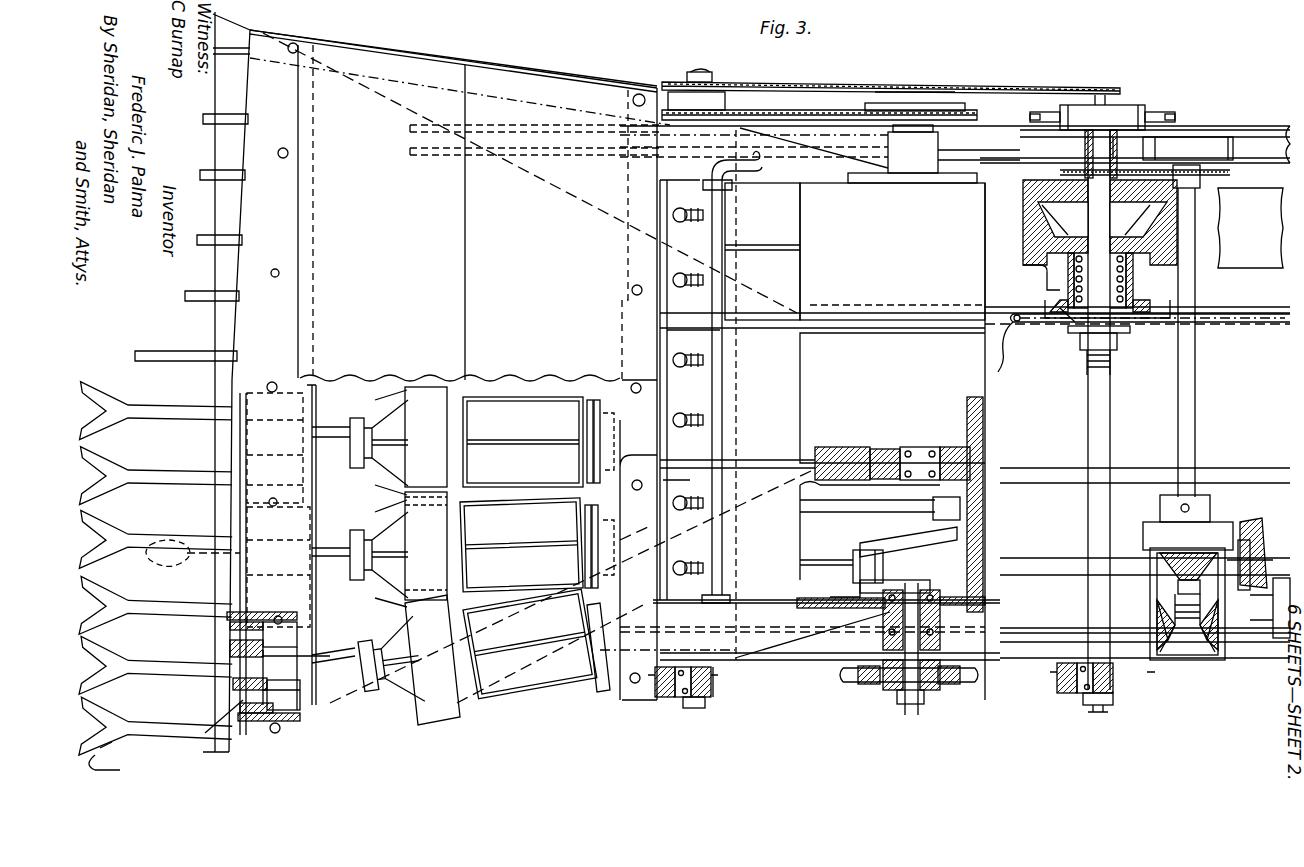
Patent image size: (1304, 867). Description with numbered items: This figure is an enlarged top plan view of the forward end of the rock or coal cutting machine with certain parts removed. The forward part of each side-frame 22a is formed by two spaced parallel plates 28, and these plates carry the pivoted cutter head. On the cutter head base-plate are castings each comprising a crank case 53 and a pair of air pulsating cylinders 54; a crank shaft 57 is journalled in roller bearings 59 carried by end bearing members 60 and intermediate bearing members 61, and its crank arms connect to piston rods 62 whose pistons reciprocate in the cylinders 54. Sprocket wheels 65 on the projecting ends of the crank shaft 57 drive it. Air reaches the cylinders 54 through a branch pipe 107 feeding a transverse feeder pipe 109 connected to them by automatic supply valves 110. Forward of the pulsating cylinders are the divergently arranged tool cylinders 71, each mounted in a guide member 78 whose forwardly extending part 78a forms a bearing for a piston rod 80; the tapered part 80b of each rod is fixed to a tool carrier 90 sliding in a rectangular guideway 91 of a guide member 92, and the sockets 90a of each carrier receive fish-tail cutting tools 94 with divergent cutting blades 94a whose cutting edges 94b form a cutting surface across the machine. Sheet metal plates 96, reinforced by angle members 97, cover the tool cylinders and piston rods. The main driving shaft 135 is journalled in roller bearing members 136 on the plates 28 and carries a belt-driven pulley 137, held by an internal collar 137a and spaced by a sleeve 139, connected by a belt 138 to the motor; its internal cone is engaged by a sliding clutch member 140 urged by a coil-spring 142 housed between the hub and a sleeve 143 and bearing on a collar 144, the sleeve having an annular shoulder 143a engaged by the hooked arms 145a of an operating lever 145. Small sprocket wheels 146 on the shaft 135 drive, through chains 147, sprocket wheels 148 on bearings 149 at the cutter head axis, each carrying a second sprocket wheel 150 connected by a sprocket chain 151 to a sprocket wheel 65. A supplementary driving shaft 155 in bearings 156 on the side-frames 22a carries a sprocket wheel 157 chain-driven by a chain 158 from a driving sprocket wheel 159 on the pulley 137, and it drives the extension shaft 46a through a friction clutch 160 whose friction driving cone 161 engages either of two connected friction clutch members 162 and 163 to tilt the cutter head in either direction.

The side-frame 22a is at (1255, 140).
The parallel plates 28 is at (560, 153).
The extension shaft 46a is at (1032, 573).
The crank case 53 is at (892, 436).
The air pulsating cylinders 54 is at (780, 275).
The crank shaft 57 is at (900, 545).
The roller bearings 59 is at (925, 600).
The end bearing members 60 is at (935, 150).
The bearing members 61 is at (975, 470).
The piston rods 62 is at (833, 572).
The sprocket wheels 65 is at (912, 103).
The tool cylinders 71 is at (537, 548).
The guide member 78 is at (432, 556).
The forwardly extending part 78a is at (385, 545).
The piston rod 80 is at (330, 650).
The tapered part 80b is at (236, 670).
The tool carrier 90 is at (275, 735).
The sockets 90a is at (236, 745).
The rectangular guideway 91 is at (270, 437).
The guide member 92 is at (193, 554).
The cutting tool 94 is at (158, 478).
The divergent cutting blades 94a is at (106, 748).
The cutting edges 94b is at (110, 778).
The sheet metal plates 96 is at (523, 365).
The angle members 97 is at (520, 68).
The branch pipe 107 is at (760, 172).
The feeder pipe 109 is at (723, 448).
The automatic supply valves 110 is at (672, 278).
The main driving shaft 135 is at (1100, 410).
The roller bearing members 136 is at (1120, 108).
The pulley 137 is at (1030, 198).
The internal collar 137a is at (1075, 200).
The belt 138 is at (1256, 262).
The sleeve 139 is at (1160, 112).
The clutch member 140 is at (1040, 272).
The coil-spring 142 is at (1072, 333).
The sleeve 143 is at (1130, 275).
The annular shoulder 143a is at (1062, 322).
The collar 144 is at (1118, 335).
The operating lever 145 is at (1213, 330).
The hooked arms 145a is at (1060, 305).
The sprocket wheels 146 is at (1000, 378).
The chains 147 is at (985, 88).
The sprocket wheels 148 is at (716, 700).
The bearings 149 is at (695, 710).
The second sprocket wheel 150 is at (720, 678).
The sprocket chain 151 is at (822, 110).
The supplementary driving shaft 155 is at (1195, 425).
The bearings 156 is at (1210, 150).
The sprocket wheel 157 is at (1232, 176).
The chain 158 is at (1175, 170).
The driving sprocket wheel 159 is at (1080, 175).
The friction clutch 160 is at (1190, 655).
The friction driving cone 161 is at (1185, 560).
The friction clutch member 162 is at (1170, 645).
The friction clutch member 163 is at (1220, 670).